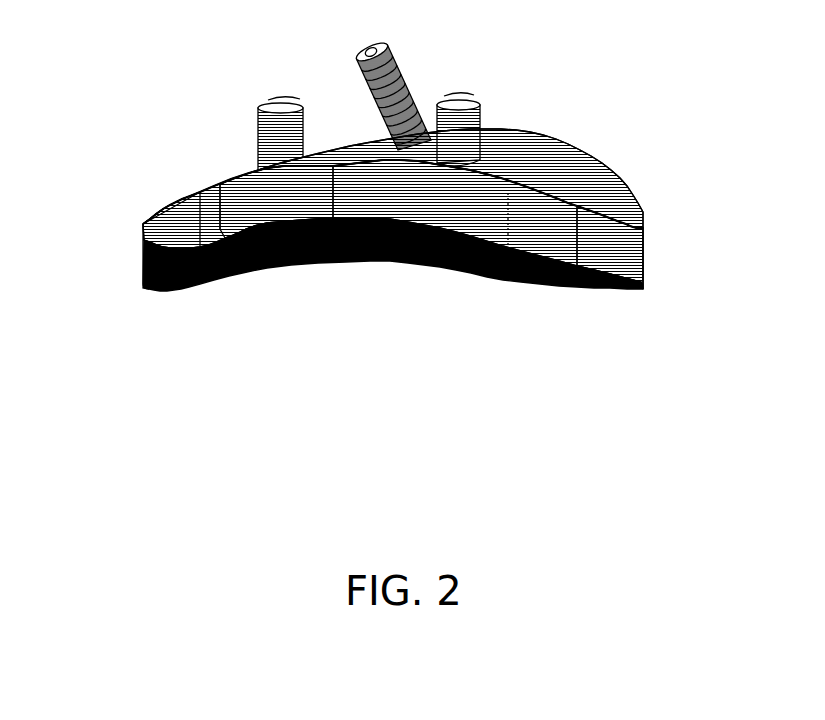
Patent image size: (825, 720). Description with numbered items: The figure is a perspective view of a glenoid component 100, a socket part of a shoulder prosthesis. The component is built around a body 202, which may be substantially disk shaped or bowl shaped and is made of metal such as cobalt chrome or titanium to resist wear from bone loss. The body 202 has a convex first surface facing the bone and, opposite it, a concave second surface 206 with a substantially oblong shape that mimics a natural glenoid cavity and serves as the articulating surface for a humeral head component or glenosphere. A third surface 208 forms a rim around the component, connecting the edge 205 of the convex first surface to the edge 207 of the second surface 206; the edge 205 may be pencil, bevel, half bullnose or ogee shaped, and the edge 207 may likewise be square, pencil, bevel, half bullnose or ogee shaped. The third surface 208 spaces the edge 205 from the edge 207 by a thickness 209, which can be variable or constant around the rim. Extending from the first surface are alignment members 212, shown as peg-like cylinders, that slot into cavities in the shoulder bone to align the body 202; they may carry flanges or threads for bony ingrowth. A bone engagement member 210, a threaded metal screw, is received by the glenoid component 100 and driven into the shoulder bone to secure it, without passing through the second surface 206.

The glenoid component 100 is at (698, 160).
The body 202 is at (643, 253).
The edge of the first surface 205 is at (577, 266).
The second surface 206 is at (267, 267).
The edge of the second surface 207 is at (437, 265).
The third surface 208 is at (143, 248).
The thickness 209 is at (498, 247).
The bone engagement member 210 is at (400, 57).
The alignment member 212 is at (273, 131).